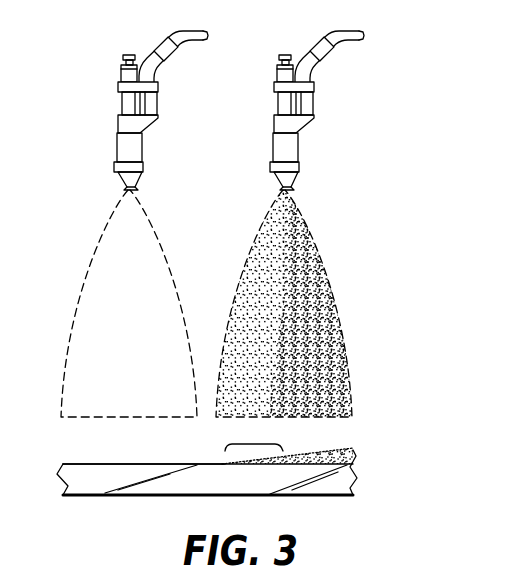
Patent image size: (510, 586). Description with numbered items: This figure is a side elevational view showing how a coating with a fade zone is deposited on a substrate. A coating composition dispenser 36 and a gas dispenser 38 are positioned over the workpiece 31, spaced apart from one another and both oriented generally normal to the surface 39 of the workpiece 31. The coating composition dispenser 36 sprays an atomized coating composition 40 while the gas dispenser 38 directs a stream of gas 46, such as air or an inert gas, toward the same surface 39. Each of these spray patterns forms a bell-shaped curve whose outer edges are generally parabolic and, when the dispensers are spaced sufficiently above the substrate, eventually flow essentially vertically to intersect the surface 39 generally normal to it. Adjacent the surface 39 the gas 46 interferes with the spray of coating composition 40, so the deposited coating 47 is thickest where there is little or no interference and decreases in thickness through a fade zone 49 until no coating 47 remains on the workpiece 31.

The workpiece 31 is at (337, 497).
The coating composition dispenser 36 is at (314, 102).
The gas dispenser 38 is at (121, 100).
The surface 39 is at (118, 464).
The coating composition 40 is at (325, 259).
The gas 46 is at (83, 277).
The coating 47 is at (355, 454).
The fade zone 49 is at (274, 440).